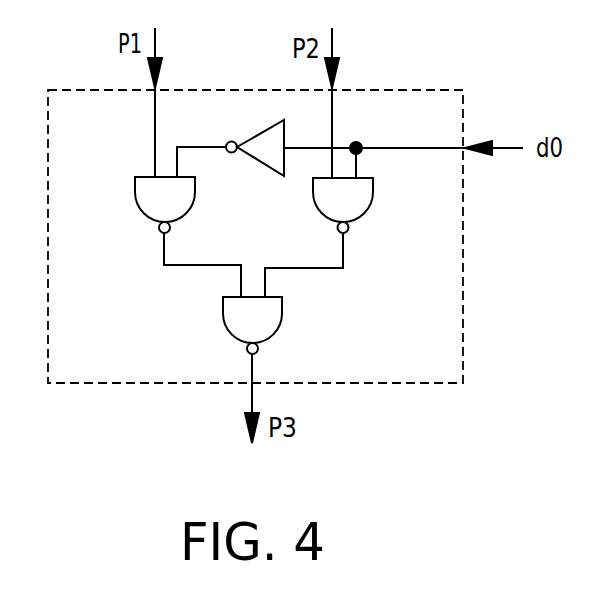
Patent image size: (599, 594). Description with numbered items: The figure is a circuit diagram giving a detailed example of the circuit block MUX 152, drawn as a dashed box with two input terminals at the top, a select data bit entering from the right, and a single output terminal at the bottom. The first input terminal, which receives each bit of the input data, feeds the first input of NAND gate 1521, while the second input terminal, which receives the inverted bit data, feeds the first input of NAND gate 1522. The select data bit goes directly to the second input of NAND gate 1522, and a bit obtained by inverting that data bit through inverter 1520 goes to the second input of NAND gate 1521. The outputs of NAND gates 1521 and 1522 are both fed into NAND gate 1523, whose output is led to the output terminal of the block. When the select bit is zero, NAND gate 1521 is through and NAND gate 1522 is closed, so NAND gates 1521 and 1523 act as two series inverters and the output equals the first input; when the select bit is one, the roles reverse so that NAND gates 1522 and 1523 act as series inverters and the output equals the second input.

The circuit block MUX 152 is at (112, 370).
The inverter 1520 is at (266, 158).
The NAND gate 1521 is at (158, 199).
The NAND gate 1522 is at (352, 195).
The NAND gate 1523 is at (257, 319).